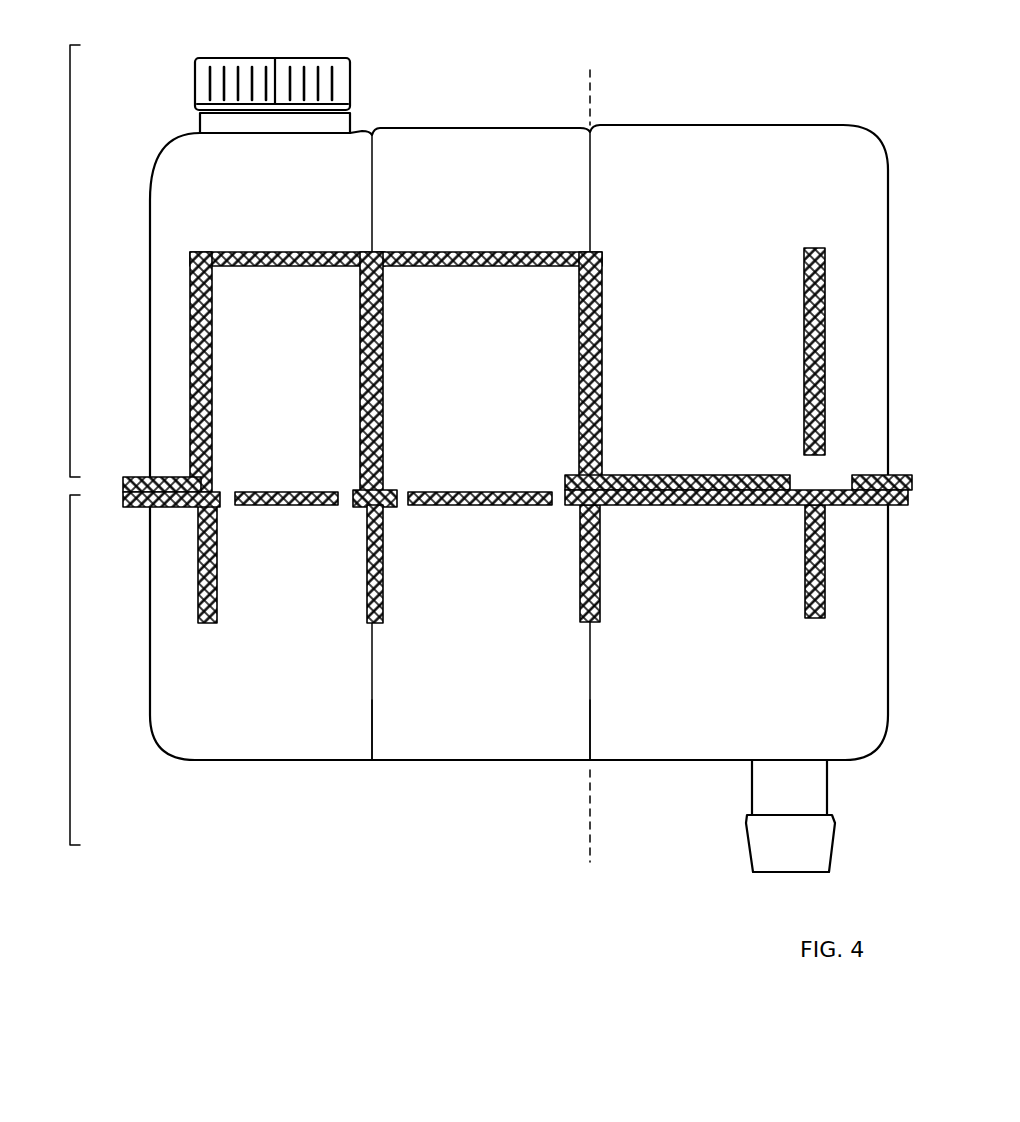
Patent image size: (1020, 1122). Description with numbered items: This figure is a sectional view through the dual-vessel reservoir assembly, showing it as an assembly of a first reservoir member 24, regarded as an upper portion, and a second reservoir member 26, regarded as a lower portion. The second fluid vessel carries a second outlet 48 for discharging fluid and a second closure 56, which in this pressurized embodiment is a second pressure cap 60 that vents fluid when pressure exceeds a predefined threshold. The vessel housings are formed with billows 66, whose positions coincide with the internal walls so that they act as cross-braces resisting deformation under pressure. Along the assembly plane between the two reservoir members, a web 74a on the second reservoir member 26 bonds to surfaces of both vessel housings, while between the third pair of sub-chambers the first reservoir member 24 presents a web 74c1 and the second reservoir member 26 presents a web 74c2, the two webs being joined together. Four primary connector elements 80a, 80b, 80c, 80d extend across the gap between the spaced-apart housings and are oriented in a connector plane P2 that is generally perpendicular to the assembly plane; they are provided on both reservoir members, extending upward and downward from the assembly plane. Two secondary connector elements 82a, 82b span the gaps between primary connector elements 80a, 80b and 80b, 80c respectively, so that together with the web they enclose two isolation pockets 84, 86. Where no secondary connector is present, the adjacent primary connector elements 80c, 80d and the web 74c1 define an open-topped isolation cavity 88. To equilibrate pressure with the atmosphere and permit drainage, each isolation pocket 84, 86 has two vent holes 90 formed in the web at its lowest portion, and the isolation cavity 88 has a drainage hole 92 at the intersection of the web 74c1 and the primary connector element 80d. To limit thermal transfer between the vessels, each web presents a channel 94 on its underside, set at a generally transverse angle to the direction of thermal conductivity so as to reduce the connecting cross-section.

The first reservoir member 24 is at (70, 264).
The second reservoir member 26 is at (70, 672).
The second outlet 48 is at (766, 783).
The second closure 56 is at (274, 59).
The second pressure cap 60 is at (265, 58).
The billows 66 is at (370, 765).
The web 74a is at (272, 492).
The web 74c1 is at (665, 475).
The web 74c2 is at (755, 502).
The primary connector element 80a is at (213, 357).
The primary connector element 80b is at (383, 367).
The primary connector element 80c is at (603, 380).
The primary connector element 80d is at (803, 342).
The secondary connector element 82a is at (325, 252).
The secondary connector element 82b is at (512, 252).
The isolation pocket 84 is at (303, 393).
The isolation pocket 86 is at (500, 393).
The isolation cavity 88 is at (724, 393).
The vent holes 90 is at (226, 492).
The drainage hole 92 is at (828, 462).
The channel 94 is at (295, 503).
The connector plane P2 is at (596, 826).